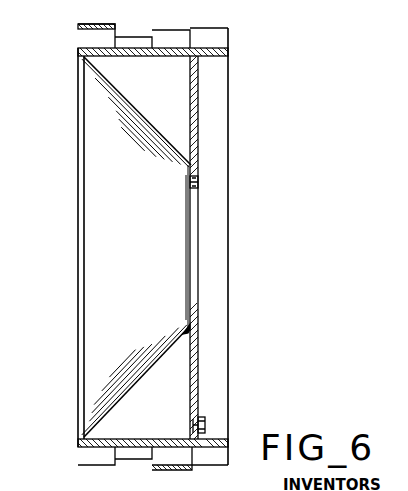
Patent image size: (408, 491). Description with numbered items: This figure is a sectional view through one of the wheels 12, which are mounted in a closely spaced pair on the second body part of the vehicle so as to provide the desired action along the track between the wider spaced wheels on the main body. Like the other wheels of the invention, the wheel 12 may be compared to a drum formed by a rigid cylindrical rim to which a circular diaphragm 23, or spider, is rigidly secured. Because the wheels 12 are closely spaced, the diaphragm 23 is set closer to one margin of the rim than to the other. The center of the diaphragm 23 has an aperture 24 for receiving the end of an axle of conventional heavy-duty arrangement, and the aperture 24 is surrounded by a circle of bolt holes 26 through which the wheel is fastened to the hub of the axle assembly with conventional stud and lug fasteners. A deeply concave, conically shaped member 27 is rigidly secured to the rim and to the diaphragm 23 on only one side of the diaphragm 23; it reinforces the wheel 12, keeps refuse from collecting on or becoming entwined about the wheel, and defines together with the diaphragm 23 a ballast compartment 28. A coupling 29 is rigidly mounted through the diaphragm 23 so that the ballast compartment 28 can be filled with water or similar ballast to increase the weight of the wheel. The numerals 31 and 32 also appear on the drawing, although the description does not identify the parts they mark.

The wheel 12 is at (233, 128).
The circular diaphragm 23 is at (199, 87).
The aperture 24 is at (189, 196).
The bolt holes 26 is at (199, 182).
The conically shaped member 27 is at (115, 97).
The ballast compartment 28 is at (167, 416).
The coupling 29 is at (206, 425).
The bottom mounting blocks 31 is at (146, 460).
The top mounting blocks 32 is at (112, 22).